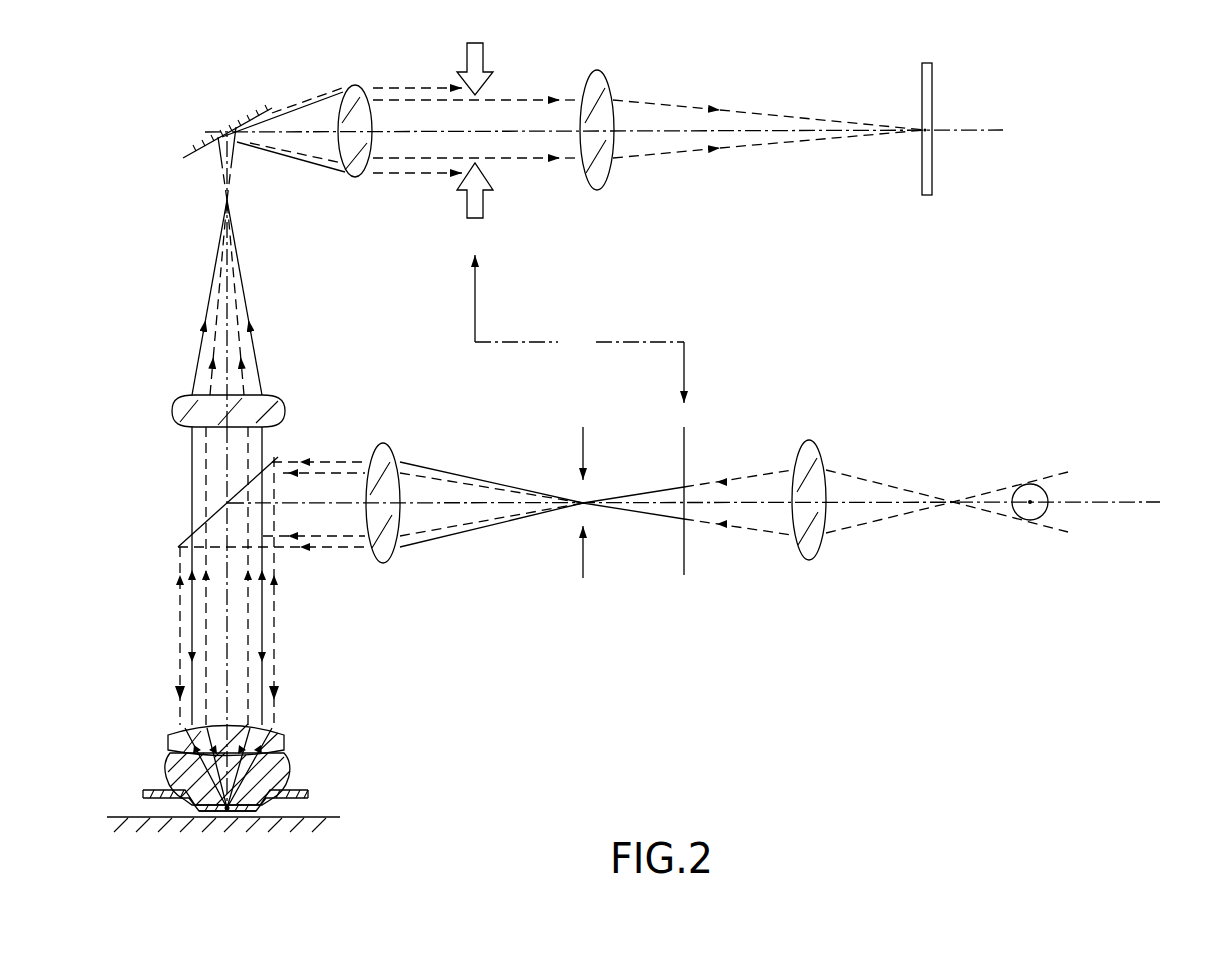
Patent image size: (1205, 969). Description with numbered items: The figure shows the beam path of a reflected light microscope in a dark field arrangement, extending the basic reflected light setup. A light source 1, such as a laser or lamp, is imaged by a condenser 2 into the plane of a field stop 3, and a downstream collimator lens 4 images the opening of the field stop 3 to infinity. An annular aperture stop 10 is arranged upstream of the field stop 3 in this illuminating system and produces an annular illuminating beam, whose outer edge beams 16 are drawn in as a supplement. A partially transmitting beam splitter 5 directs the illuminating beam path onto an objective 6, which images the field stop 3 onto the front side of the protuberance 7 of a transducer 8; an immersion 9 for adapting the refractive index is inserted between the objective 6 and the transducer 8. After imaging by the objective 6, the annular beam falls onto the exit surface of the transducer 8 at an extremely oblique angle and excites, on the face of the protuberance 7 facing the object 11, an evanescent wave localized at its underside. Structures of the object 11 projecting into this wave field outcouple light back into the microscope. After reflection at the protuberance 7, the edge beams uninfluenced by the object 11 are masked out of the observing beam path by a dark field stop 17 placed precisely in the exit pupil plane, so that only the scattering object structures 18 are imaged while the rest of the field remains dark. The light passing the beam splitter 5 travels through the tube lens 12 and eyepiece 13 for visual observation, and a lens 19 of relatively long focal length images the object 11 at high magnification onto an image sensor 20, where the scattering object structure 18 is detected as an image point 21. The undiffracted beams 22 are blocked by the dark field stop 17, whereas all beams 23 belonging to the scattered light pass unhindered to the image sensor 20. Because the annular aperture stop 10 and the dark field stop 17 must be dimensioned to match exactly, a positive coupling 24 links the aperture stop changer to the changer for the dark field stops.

The light source 1 is at (1032, 521).
The condenser 2 is at (820, 555).
The field stop 3 is at (583, 440).
The collimator lens 4 is at (393, 448).
The beam splitter 5 is at (280, 456).
The objective 6 is at (285, 737).
The protuberance 7 is at (192, 818).
The transducer 8 is at (308, 794).
The immersion 9 is at (286, 772).
The annular aperture stop 10 is at (684, 575).
The object 11 is at (322, 820).
The tube lens 12 is at (279, 403).
The eyepiece 13 is at (353, 177).
The outer edge beams 16 is at (180, 645).
The dark field stop 17 is at (484, 212).
The scattering object structures 18 is at (229, 814).
The lens 19 is at (600, 188).
The image sensor 20 is at (922, 195).
The image point 21 is at (932, 130).
The undiffracted beams 22 is at (392, 174).
The beams belonging to the scattered light 23 is at (503, 97).
The positive coupling 24 is at (579, 329).